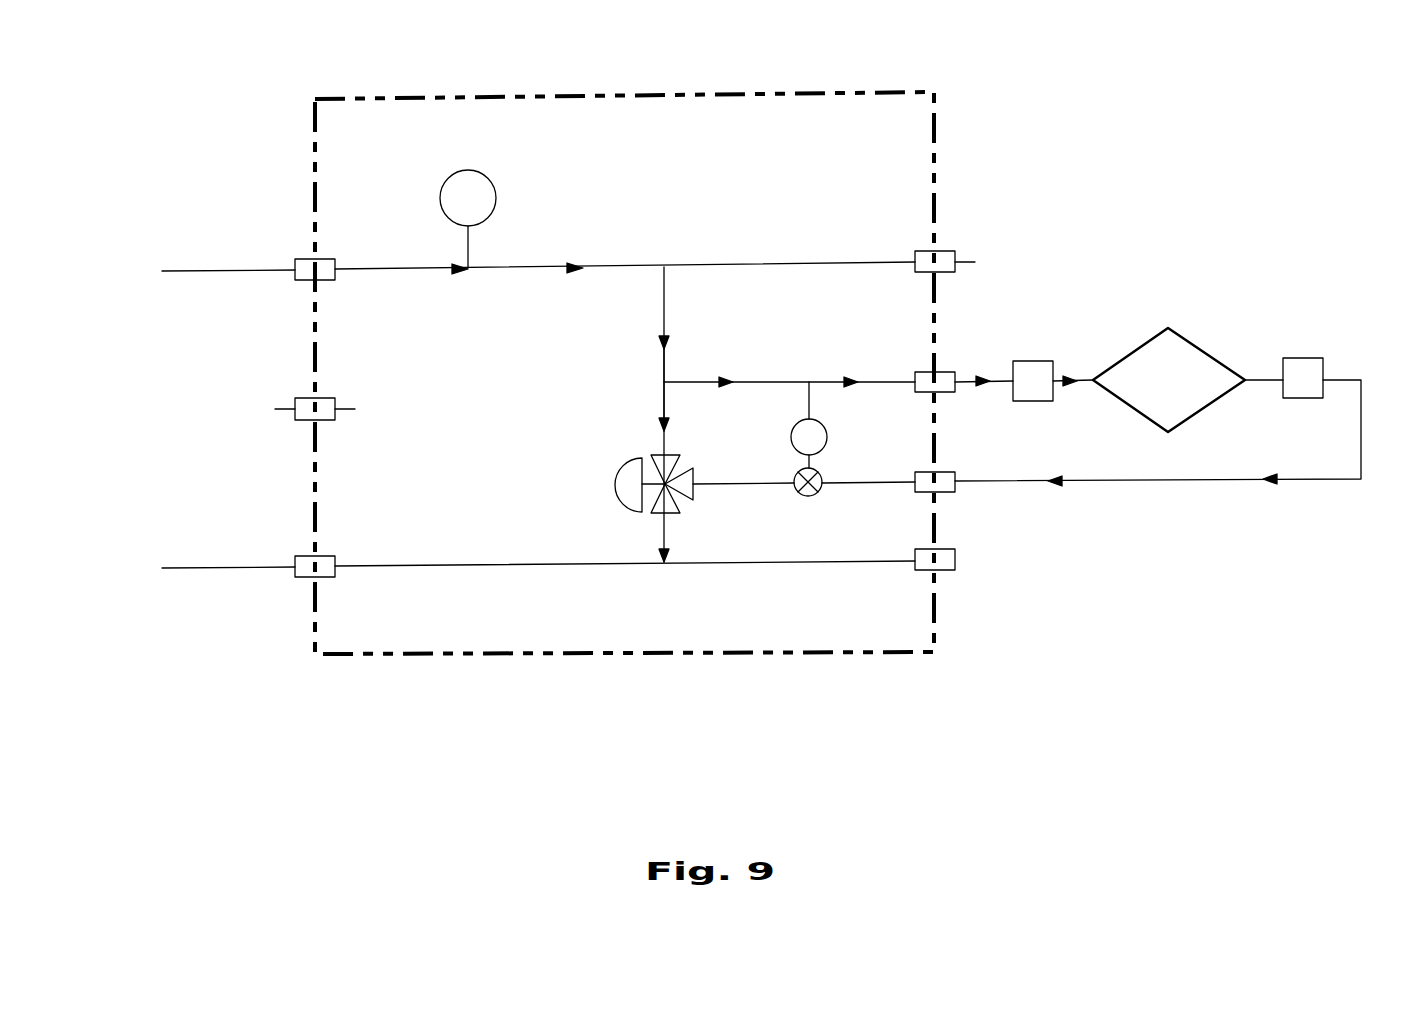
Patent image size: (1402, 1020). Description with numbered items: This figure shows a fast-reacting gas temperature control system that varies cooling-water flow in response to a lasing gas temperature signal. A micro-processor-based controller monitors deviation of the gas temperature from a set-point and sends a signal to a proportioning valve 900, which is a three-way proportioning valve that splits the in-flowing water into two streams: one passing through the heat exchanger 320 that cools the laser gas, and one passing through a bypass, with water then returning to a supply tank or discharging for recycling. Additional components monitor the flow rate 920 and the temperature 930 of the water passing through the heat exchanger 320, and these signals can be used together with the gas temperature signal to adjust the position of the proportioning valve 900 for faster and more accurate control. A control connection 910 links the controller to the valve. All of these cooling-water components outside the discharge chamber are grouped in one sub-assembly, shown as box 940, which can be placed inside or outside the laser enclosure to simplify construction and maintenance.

The sub-assembly box 940 is at (626, 94).
The cooling-water temperature sensor 930 is at (448, 186).
The control line 910 is at (648, 421).
The proportioning valve 900 is at (613, 495).
The flow rate sensor 920 is at (822, 420).
The heat exchanger 320 is at (1183, 336).